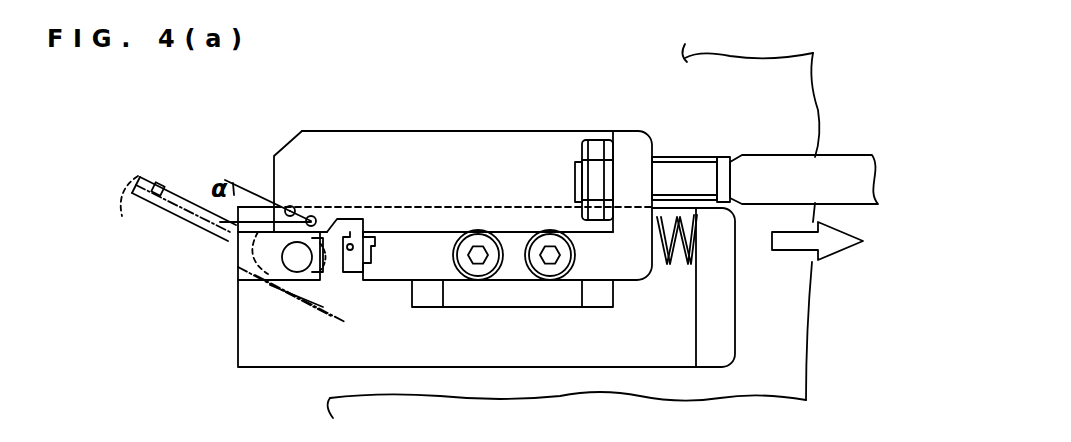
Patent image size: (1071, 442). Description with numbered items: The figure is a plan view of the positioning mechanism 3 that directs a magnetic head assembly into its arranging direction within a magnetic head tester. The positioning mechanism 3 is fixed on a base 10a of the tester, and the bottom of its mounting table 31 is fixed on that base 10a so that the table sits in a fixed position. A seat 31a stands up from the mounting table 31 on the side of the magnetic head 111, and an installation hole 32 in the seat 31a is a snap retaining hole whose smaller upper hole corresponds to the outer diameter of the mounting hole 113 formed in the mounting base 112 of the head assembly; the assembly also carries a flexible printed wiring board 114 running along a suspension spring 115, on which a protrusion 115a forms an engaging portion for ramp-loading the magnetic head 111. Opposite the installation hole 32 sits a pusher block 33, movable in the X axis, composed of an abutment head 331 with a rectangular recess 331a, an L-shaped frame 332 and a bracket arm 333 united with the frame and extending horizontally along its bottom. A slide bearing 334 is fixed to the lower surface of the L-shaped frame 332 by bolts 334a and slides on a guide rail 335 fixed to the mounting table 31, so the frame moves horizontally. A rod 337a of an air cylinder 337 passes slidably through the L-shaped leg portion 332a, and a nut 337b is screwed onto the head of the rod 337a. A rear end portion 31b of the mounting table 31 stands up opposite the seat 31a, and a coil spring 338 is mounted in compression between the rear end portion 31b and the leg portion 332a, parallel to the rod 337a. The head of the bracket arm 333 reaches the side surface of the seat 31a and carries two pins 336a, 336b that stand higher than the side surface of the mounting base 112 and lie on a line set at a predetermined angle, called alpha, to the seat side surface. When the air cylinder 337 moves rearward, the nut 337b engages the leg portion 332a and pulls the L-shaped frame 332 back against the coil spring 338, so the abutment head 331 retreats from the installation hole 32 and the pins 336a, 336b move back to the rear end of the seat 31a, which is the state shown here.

The positioning mechanism 3 is at (508, 104).
The base 10a is at (730, 60).
The mounting table 31 is at (404, 357).
The seat 31a is at (252, 281).
The rear end portion 31b is at (722, 342).
The installation hole 32 is at (315, 218).
The pusher block 33 is at (597, 262).
The abutment head 331 is at (357, 272).
The rectangular recess 331a is at (385, 250).
The L-shaped frame 332 is at (430, 265).
The L-shaped leg portion 332a is at (628, 131).
The bracket arm 333 is at (487, 131).
The slide bearing 334 is at (534, 296).
The bolts 334a is at (550, 250).
The guide rail 335 is at (351, 245).
The pin 336a is at (290, 206).
The pin 336b is at (313, 217).
The air cylinder 337 is at (845, 155).
The rod 337a is at (699, 155).
The nut 337b is at (588, 139).
The coil spring 338 is at (687, 266).
The magnetic head 111 is at (163, 175).
The mounting base 112 is at (223, 242).
The mounting hole 113 is at (305, 278).
The flexible printed wiring board 114 is at (337, 315).
The suspension spring 115 is at (204, 178).
The protrusion 115a is at (123, 211).